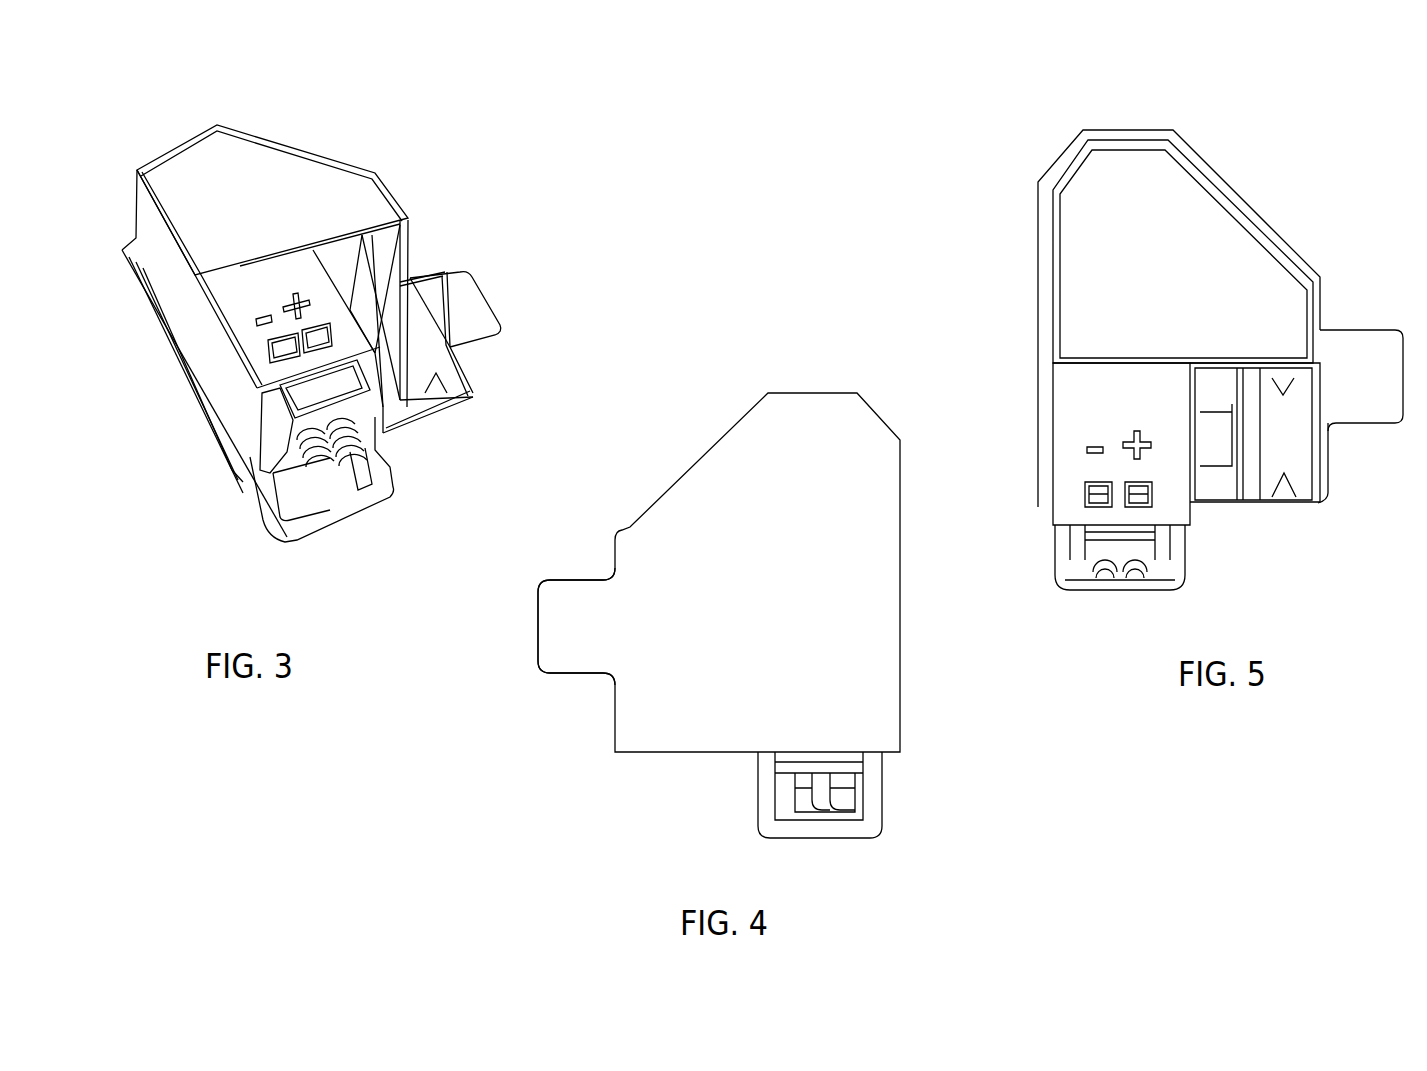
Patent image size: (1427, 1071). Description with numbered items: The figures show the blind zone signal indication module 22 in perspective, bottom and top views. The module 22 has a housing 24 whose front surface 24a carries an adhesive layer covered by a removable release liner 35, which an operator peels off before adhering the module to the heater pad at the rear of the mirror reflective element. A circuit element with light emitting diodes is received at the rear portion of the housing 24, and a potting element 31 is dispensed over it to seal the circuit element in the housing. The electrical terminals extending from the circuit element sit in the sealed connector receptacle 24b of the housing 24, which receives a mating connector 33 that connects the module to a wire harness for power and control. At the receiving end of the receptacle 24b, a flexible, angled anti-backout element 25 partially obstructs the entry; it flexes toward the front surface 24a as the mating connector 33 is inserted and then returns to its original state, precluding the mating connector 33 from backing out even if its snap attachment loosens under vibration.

In FIG. 3, the signal indication module 22 is at (431, 178).
In FIG. 4, the signal indication module 22 is at (730, 398).
In FIG. 5, the signal indication module 22 is at (1136, 108).
In FIG. 3, the potting element 31 is at (235, 159).
In FIG. 5, the potting element 31 is at (1190, 190).
In FIG. 3, the housing 24 is at (158, 253).
In FIG. 4, the front surface 24a is at (878, 777).
In FIG. 5, the connector receptacle 24b is at (1098, 430).
In FIG. 3, the removable release liner 35 is at (450, 300).
In FIG. 4, the removable release liner 35 is at (568, 642).
In FIG. 5, the removable release liner 35 is at (1357, 367).
In FIG. 3, the mating connector 33 is at (270, 423).
In FIG. 5, the mating connector 33 is at (1183, 537).
In FIG. 3, the anti-backout element 25 is at (345, 508).
In FIG. 4, the anti-backout element 25 is at (808, 797).
In FIG. 5, the anti-backout element 25 is at (1100, 586).